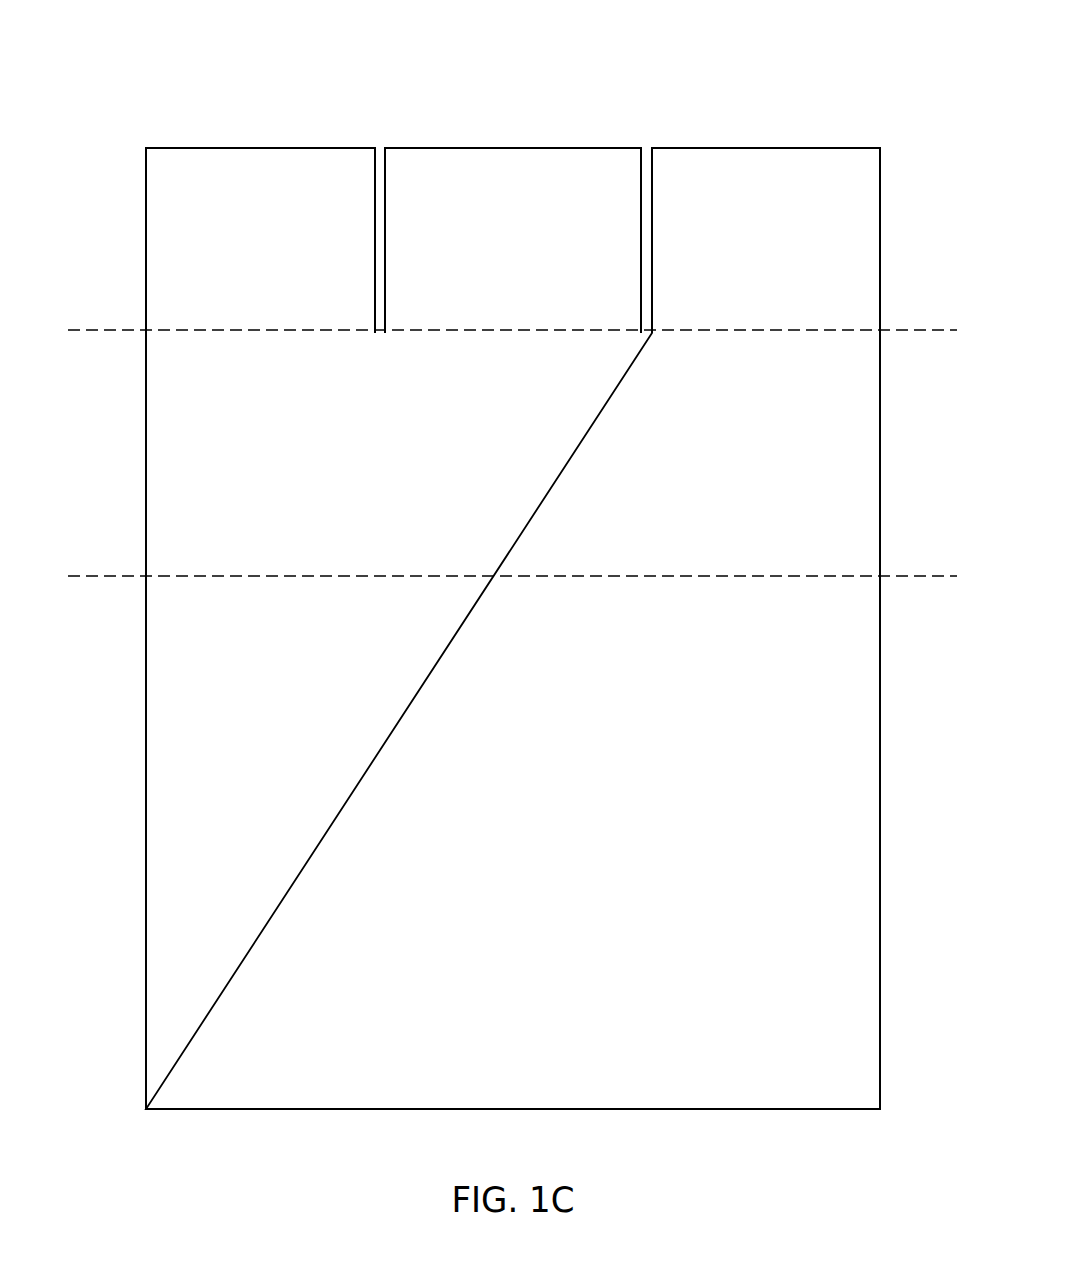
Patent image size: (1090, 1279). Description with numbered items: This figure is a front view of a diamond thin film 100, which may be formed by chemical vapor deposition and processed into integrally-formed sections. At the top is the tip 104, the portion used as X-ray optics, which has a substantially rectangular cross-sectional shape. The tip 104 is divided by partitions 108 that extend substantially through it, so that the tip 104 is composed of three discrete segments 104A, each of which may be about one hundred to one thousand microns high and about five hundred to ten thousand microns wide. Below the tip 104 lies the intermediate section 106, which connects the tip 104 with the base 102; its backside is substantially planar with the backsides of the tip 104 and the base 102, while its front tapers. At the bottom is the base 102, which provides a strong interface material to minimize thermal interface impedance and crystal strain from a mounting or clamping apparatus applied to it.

The diamond thin film 100 is at (842, 51).
The base 102 is at (853, 853).
The tip 104 is at (142, 207).
The discrete segments 104A is at (262, 148).
The intermediate section 106 is at (853, 461).
The partitions 108 is at (647, 186).